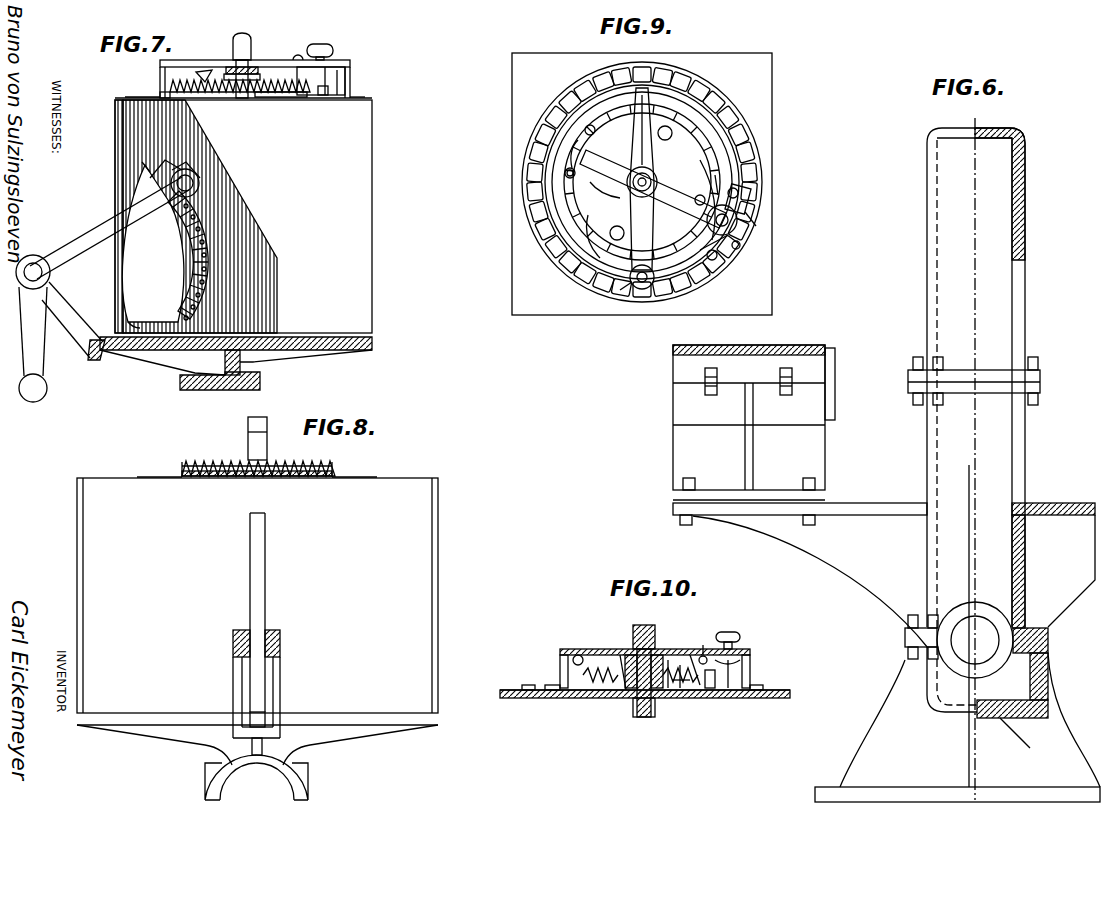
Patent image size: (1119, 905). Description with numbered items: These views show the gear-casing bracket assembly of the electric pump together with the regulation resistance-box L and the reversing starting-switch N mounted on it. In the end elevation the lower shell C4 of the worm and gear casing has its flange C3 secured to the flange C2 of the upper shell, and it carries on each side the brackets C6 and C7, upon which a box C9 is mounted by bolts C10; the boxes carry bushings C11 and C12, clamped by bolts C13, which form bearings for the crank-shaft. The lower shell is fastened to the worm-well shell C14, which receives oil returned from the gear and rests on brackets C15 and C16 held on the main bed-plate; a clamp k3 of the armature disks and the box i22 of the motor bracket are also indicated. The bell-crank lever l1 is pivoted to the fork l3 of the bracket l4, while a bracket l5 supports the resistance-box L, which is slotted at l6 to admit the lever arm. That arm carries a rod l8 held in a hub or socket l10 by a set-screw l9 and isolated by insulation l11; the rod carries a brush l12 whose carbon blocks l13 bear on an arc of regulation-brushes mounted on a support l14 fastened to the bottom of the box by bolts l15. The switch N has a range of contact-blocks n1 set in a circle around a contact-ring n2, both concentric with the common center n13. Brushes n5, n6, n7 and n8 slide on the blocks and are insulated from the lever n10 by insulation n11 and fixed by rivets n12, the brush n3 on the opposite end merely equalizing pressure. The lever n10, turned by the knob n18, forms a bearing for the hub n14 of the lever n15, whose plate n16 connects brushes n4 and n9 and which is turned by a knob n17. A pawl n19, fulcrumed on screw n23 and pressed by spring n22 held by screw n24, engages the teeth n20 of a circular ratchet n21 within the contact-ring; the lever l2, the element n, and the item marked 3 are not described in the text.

In FIG. 7, the regulation resistance-box L is at (243, 215).
In FIG. 8, the regulation resistance-box L is at (257, 601).
In FIG. 9, the regulation resistance-box L is at (642, 182).
In FIG. 7, the reversing starting-switch N is at (277, 80).
In FIG. 8, the reversing starting-switch N is at (291, 464).
In FIG. 9, the reversing starting-switch N is at (642, 184).
In FIG. 7, the bell-crank lever l1 is at (33, 344).
In FIG. 7, the lever arm l2 is at (80, 240).
In FIG. 7, the fork l3 is at (73, 321).
In FIG. 8, the fork l3 is at (245, 630).
In FIG. 8, the bracket l4 is at (245, 740).
In FIG. 8, the bracket l5 is at (256, 745).
In FIG. 7, the slot l6 is at (115, 165).
In FIG. 8, the slot l6 is at (258, 560).
In FIG. 7, the rod l8 is at (190, 160).
In FIG. 7, the set-screw l9 is at (202, 176).
In FIG. 7, the hub or socket l10 is at (205, 165).
In FIG. 7, the insulation l11 is at (200, 186).
In FIG. 7, the brush l12 is at (206, 250).
In FIG. 7, the carbon blocks l13 is at (205, 232).
In FIG. 7, the support l14 is at (199, 216).
In FIG. 7, the bolts l15 is at (140, 318).
In FIG. 8, the box i22 is at (285, 765).
In FIG. 7, the pointer n is at (301, 42).
In FIG. 9, the pointer n is at (642, 179).
In FIG. 10, the pointer n is at (636, 664).
In FIG. 7, the range of contact-blocks n1 is at (128, 97).
In FIG. 8, the range of contact-blocks n1 is at (150, 477).
In FIG. 9, the range of contact-blocks n1 is at (522, 196).
In FIG. 10, the range of contact-blocks n1 is at (533, 688).
In FIG. 9, the contact-ring n2 is at (641, 182).
In FIG. 10, the contact-ring n2 is at (645, 717).
In FIG. 7, the brush n3 is at (160, 94).
In FIG. 9, the brush n3 is at (632, 183).
In FIG. 7, the brush n4 is at (208, 72).
In FIG. 9, the brush n4 is at (612, 162).
In FIG. 10, the brush n4 is at (598, 660).
In FIG. 9, the sliding brush n5 is at (800, 190).
In FIG. 10, the sliding brush n5 is at (550, 685).
In FIG. 9, the sliding brush n6 is at (760, 224).
In FIG. 10, the sliding brush n6 is at (762, 685).
In FIG. 9, the sliding brush n7 is at (722, 258).
In FIG. 7, the sliding brush n8 is at (330, 90).
In FIG. 9, the sliding brush n8 is at (730, 270).
In FIG. 7, the sliding brush n9 is at (246, 98).
In FIG. 9, the sliding brush n9 is at (630, 300).
In FIG. 9, the lever n10 is at (660, 195).
In FIG. 10, the lever n10 is at (560, 652).
In FIG. 7, the insulation n11 is at (262, 72).
In FIG. 9, the insulation n11 is at (719, 189).
In FIG. 10, the insulation n11 is at (752, 650).
In FIG. 9, the rivets n12 is at (740, 192).
In FIG. 10, the rivets n12 is at (580, 655).
In FIG. 7, the common center n13 is at (243, 40).
In FIG. 8, the common center n13 is at (258, 445).
In FIG. 9, the common center n13 is at (655, 180).
In FIG. 10, the common center n13 is at (665, 655).
In FIG. 10, the hub n14 is at (668, 698).
In FIG. 9, the lever n15 is at (642, 170).
In FIG. 7, the plate n16 is at (218, 96).
In FIG. 9, the plate n16 is at (605, 190).
In FIG. 10, the plate n16 is at (678, 698).
In FIG. 7, the knob n17 is at (256, 60).
In FIG. 9, the knob n17 is at (578, 320).
In FIG. 7, the knob n18 is at (322, 46).
In FIG. 9, the knob n18 is at (760, 205).
In FIG. 10, the knob n18 is at (743, 649).
In FIG. 10, the pawl n19 is at (728, 632).
In FIG. 8, the teeth n20 is at (300, 468).
In FIG. 10, the teeth n20 is at (684, 698).
In FIG. 7, the circular ratchet n21 is at (288, 96).
In FIG. 8, the circular ratchet n21 is at (333, 464).
In FIG. 10, the circular ratchet n21 is at (712, 698).
In FIG. 10, the spring n22 is at (690, 656).
In FIG. 9, the screw n23 is at (729, 178).
In FIG. 10, the screw n23 is at (752, 662).
In FIG. 9, the screw n24 is at (690, 148).
In FIG. 10, the screw n24 is at (711, 639).
In FIG. 10, the base plate 3 is at (758, 698).
In FIG. 6, the flange C2 is at (1040, 376).
In FIG. 6, the flange C3 is at (1040, 392).
In FIG. 6, the lower shell C4 is at (990, 604).
In FIG. 6, the bracket C6 is at (1053, 565).
In FIG. 6, the bracket C7 is at (800, 575).
In FIG. 6, the box C9 is at (749, 422).
In FIG. 6, the bolts C10 is at (690, 478).
In FIG. 6, the bushing C11 is at (976, 459).
In FIG. 6, the bushing C12 is at (832, 378).
In FIG. 6, the bolts C13 is at (772, 365).
In FIG. 6, the worm-well shell C14 is at (987, 660).
In FIG. 6, the bracket C15 is at (1030, 358).
In FIG. 6, the bracket C16 is at (957, 727).
In FIG. 6, the clamp k3 is at (1023, 736).